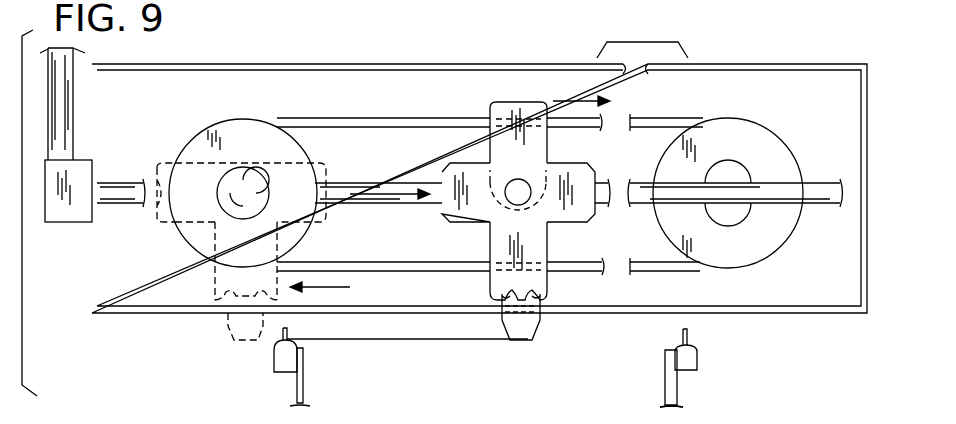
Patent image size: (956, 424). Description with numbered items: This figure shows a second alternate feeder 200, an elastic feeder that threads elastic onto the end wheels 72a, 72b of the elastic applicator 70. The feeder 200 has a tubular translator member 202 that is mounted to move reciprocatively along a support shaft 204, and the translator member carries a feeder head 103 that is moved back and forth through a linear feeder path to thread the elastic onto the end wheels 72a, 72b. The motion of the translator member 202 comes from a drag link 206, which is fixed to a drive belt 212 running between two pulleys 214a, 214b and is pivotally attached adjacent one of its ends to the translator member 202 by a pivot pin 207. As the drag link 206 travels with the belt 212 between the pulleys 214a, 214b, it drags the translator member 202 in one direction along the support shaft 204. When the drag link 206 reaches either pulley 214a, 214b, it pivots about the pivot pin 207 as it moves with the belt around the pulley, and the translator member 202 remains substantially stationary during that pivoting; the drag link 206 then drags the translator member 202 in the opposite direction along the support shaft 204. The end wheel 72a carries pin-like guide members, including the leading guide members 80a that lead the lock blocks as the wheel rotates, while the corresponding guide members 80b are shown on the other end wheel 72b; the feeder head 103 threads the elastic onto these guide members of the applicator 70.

The second alternate feeder 200 is at (813, 60).
The pulley 214a is at (205, 127).
The pulley 214b is at (790, 148).
The drive belt 212 is at (655, 118).
The drag link 206 is at (492, 110).
The pivot pin 207 is at (511, 182).
The support shaft 204 is at (668, 180).
The tubular translator member 202 is at (515, 190).
The feeder head 103 is at (537, 325).
The leading guide members 80a is at (281, 338).
The second sensor 80b is at (681, 340).
The end wheel 72a is at (316, 392).
The end wheel 72b is at (690, 389).
The elastic applicator 70 is at (722, 403).